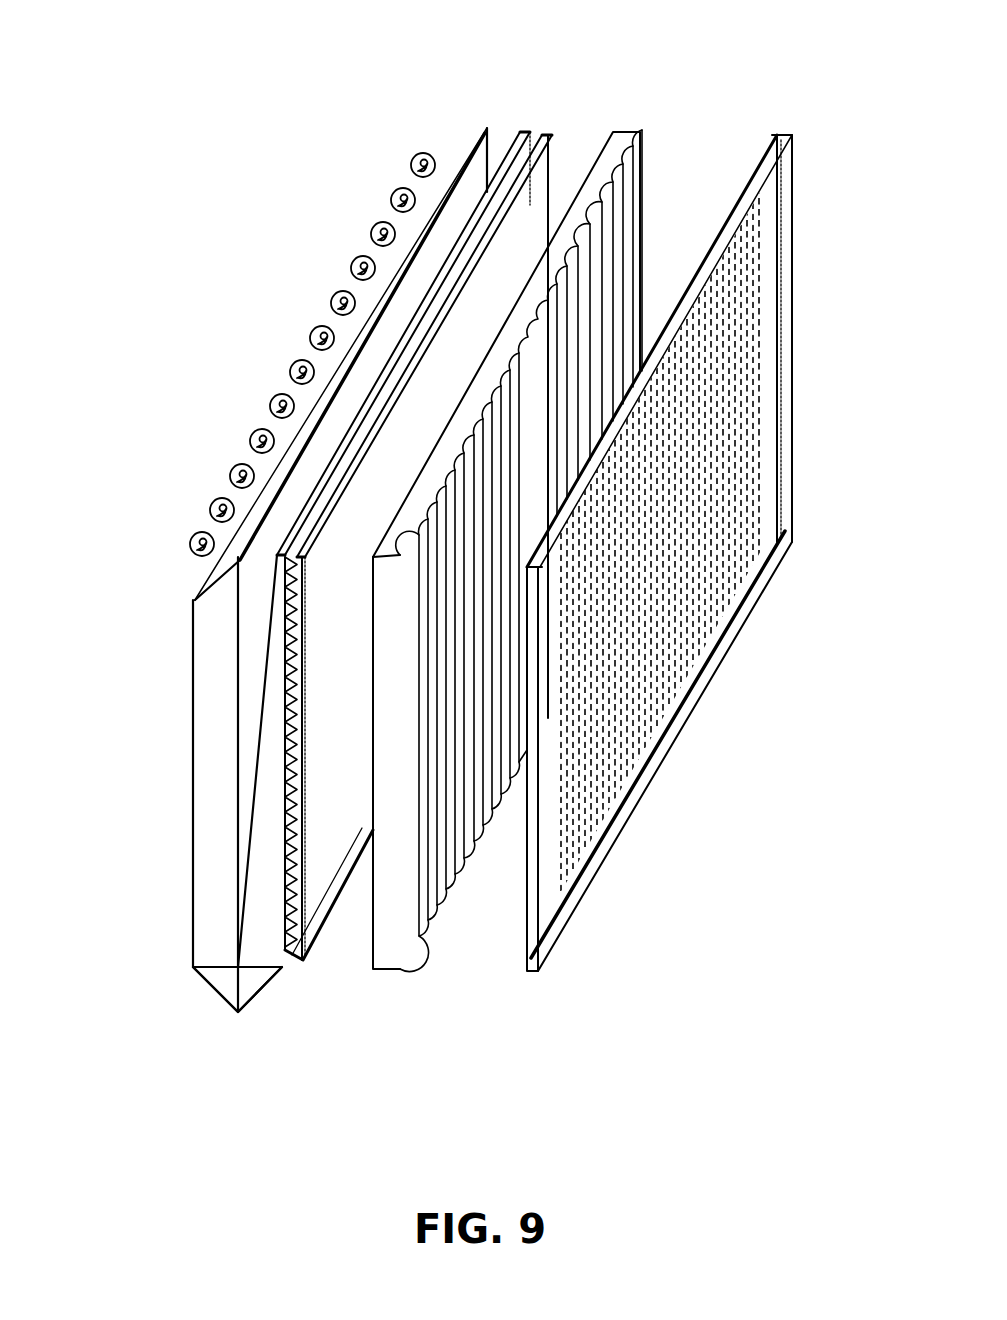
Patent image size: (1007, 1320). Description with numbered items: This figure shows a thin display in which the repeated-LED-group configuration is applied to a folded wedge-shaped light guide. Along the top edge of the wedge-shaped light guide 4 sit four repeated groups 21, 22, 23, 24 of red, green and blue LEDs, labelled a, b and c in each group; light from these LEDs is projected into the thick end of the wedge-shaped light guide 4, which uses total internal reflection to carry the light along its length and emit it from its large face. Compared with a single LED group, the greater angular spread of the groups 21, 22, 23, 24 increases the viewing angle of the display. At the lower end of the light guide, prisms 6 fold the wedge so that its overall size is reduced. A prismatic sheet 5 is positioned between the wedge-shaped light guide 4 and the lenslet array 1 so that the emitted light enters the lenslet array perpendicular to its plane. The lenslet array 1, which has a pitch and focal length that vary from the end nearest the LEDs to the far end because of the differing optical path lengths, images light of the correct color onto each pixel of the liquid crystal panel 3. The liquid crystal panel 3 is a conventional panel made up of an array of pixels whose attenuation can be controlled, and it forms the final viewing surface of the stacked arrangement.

The lenslet array 1 is at (652, 118).
The liquid crystal panel 3 is at (804, 259).
The wedge-shaped light guide 4 is at (505, 126).
The prismatic sheet 5 is at (556, 126).
The prisms 6 is at (263, 994).
The group of red, green and blue LEDs 21 is at (191, 453).
The group of red, green and blue LEDs 22 is at (252, 350).
The group of red, green and blue LEDs 23 is at (312, 246).
The group of red, green and blue LEDs 24 is at (372, 142).